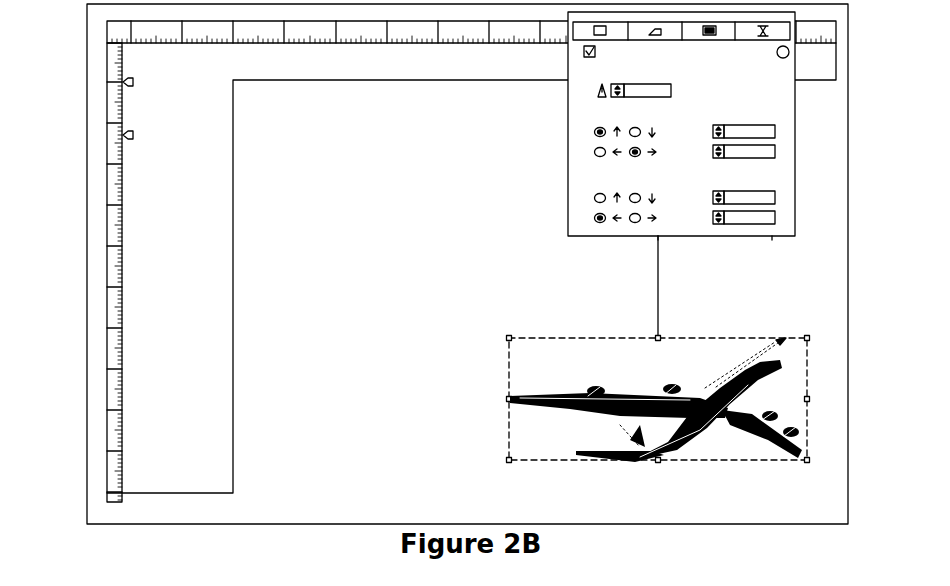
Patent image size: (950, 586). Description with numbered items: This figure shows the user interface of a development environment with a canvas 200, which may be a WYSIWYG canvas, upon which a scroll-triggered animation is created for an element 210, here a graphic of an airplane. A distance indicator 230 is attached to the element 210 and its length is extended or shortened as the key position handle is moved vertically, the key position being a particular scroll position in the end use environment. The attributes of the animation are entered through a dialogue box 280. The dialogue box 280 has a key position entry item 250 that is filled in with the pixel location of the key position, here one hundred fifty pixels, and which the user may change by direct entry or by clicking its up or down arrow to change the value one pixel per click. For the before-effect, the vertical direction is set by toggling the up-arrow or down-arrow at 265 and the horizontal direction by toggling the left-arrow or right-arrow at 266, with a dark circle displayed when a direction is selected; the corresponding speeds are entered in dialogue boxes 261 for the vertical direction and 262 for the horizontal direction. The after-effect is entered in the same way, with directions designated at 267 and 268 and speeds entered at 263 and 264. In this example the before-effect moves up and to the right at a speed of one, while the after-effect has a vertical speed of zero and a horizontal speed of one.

The canvas 200 is at (80, 74).
The element 210 is at (590, 395).
The distance indicator 230 is at (658, 288).
The key position entry item 250 is at (611, 92).
The before-effect vertical speed dialogue box 261 is at (774, 131).
The before-effect horizontal speed dialogue box 262 is at (774, 150).
The after-effect vertical speed entry item 263 is at (774, 197).
The after-effect horizontal speed entry item 264 is at (774, 218).
The before-effect vertical direction entry items 265 is at (595, 131).
The before-effect horizontal direction entry items 266 is at (595, 152).
The after-effect vertical direction entry items 267 is at (595, 197).
The after-effect horizontal direction entry items 268 is at (595, 218).
The dialogue box 280 is at (772, 238).